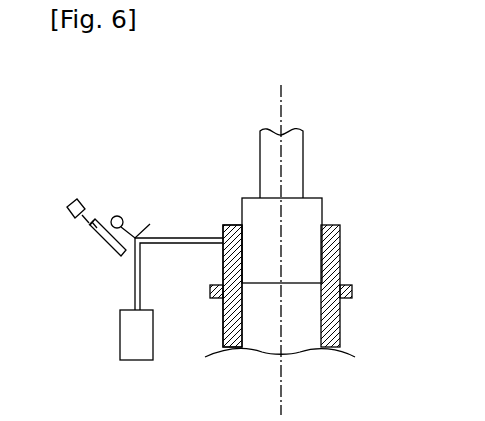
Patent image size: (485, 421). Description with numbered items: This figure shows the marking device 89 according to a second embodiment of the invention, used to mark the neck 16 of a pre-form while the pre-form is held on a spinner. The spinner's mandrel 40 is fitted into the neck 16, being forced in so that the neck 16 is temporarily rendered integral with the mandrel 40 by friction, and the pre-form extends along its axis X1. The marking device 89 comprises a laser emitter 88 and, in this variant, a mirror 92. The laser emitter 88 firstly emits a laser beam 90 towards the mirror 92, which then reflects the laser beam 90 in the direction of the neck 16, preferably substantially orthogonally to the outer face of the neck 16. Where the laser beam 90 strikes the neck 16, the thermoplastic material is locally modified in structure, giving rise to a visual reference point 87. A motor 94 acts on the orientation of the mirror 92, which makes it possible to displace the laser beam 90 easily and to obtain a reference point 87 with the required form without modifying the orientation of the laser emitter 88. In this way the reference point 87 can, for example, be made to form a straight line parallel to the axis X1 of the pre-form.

The neck 16 is at (341, 248).
The mandrel 40 is at (304, 212).
The reference point 87 is at (222, 252).
The laser emitter 88 is at (132, 338).
The marking device 89 is at (169, 133).
The laser beam 90 is at (187, 238).
The mirror 92 is at (120, 216).
The motor 94 is at (75, 199).
The axis X1 is at (282, 400).